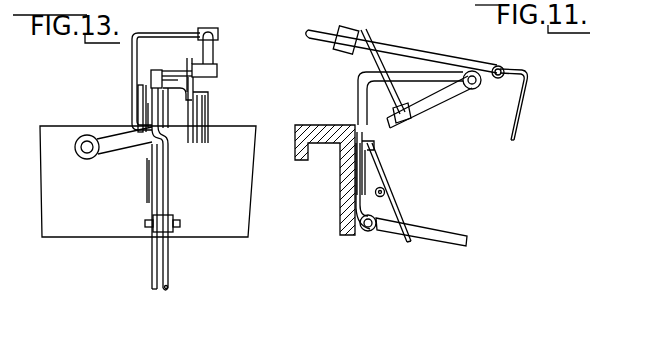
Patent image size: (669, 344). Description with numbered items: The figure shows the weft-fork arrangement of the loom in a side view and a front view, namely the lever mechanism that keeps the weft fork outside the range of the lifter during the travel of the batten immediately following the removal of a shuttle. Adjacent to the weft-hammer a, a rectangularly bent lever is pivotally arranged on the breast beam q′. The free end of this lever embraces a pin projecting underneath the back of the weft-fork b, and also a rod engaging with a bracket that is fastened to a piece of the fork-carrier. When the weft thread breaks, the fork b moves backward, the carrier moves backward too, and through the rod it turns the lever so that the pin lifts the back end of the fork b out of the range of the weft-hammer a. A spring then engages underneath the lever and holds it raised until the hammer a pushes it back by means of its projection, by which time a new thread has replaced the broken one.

In FIG. 13, the weft-hammer a is at (168, 177).
In FIG. 11, the weft-hammer a is at (343, 125).
In FIG. 13, the weft-fork b is at (206, 110).
In FIG. 11, the weft-fork b is at (521, 110).
In FIG. 13, the breast beam q′ is at (70, 210).
In FIG. 11, the breast beam q′ is at (360, 237).